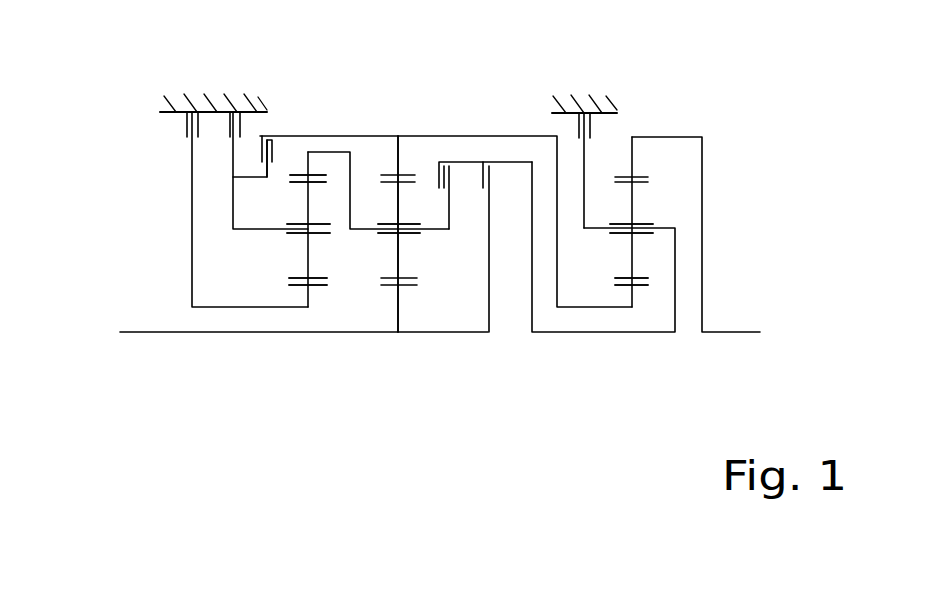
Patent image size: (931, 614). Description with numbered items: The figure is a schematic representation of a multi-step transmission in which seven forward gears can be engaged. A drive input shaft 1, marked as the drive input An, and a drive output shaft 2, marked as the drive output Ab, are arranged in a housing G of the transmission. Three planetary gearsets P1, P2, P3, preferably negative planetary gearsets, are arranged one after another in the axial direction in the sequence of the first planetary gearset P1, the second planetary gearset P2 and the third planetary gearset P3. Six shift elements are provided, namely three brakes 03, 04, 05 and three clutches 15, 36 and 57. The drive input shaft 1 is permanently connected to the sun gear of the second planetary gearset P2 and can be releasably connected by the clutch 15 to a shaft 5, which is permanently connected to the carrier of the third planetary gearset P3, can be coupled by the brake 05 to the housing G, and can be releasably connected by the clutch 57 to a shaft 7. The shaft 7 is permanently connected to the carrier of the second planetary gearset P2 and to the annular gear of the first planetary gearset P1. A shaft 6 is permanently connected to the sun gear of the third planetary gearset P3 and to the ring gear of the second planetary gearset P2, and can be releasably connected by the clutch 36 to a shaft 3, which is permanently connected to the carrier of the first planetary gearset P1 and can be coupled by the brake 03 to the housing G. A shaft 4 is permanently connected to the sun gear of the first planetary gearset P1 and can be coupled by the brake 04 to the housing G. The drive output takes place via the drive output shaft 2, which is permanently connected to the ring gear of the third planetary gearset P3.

The housing G is at (177, 103).
The brake 04 is at (178, 122).
The brake 03 is at (223, 118).
The shaft 3 is at (268, 230).
The shaft 4 is at (302, 293).
The clutch 36 is at (276, 143).
The shaft 6 is at (441, 136).
The shaft 7 is at (350, 185).
The first planetary gearset P1 is at (331, 126).
The second planetary gearset P2 is at (409, 126).
The third planetary gearset P3 is at (659, 122).
The drive input shaft 1 is at (413, 332).
The clutch 57 is at (455, 167).
The clutch 15 is at (497, 168).
The shaft 5 is at (673, 226).
The brake 05 is at (598, 123).
The drive output shaft 2 is at (703, 147).
The drive input An is at (138, 316).
The drive output Ab is at (741, 316).